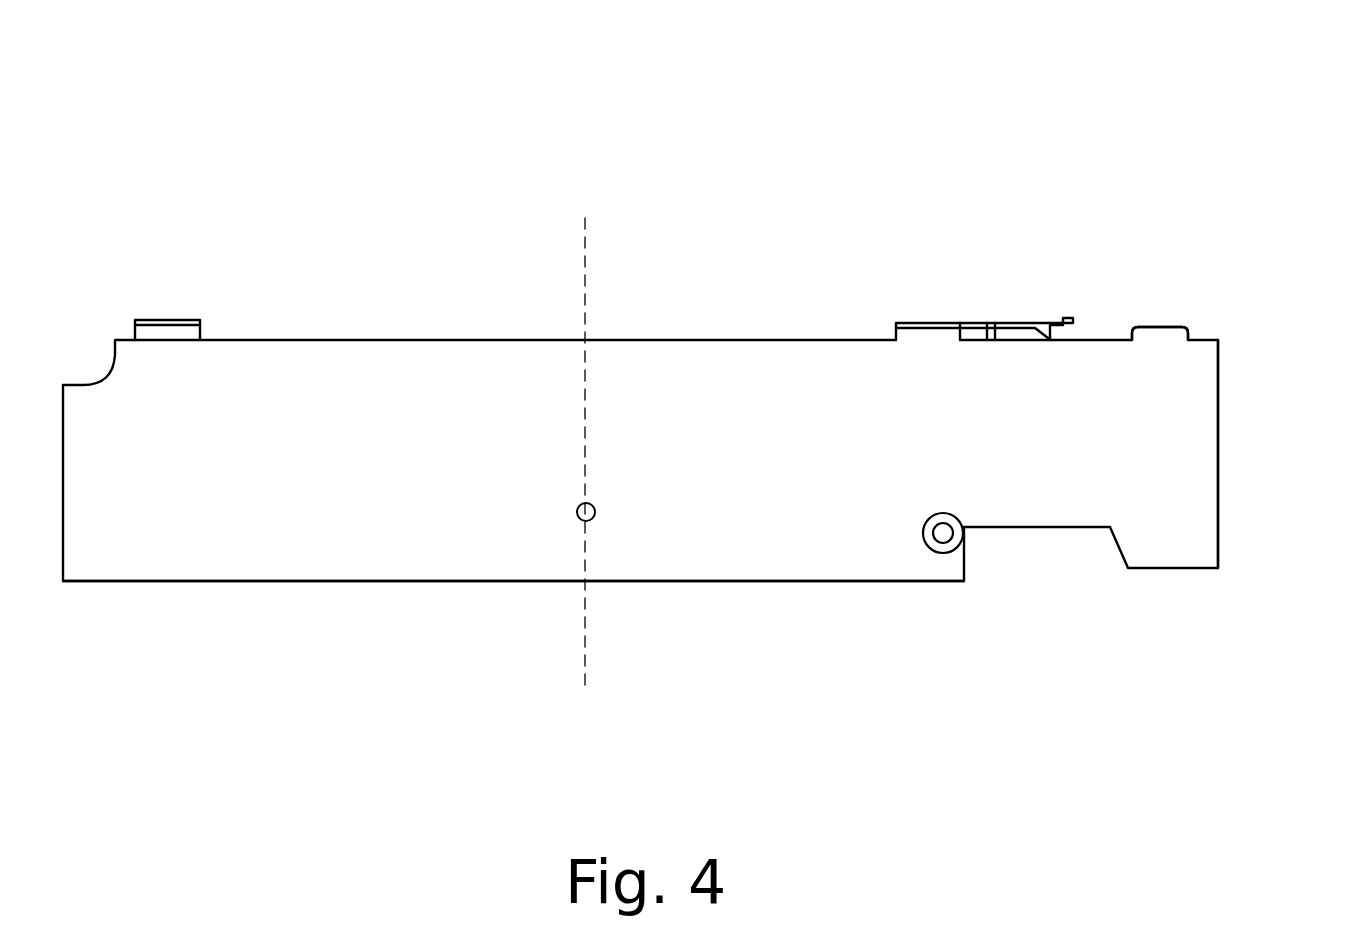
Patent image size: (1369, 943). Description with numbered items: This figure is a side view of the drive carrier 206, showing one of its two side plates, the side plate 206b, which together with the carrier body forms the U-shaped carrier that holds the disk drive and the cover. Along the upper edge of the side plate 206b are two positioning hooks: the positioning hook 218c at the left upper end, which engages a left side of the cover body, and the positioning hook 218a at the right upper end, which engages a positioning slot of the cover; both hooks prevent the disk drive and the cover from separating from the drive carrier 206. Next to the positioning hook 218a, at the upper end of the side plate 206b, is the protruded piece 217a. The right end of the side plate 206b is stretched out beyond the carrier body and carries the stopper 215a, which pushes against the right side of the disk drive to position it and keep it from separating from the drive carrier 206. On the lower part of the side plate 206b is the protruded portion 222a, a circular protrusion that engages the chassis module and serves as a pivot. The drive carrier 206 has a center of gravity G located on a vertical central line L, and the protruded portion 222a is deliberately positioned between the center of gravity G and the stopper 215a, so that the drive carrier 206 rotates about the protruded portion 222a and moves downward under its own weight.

The drive carrier 206 is at (1005, 118).
The positioning hook 218c is at (162, 338).
The positioning hook 218a is at (1043, 335).
The protruded piece 217a is at (1165, 337).
The stopper 215a is at (1220, 425).
The side plate 206b is at (230, 535).
The protruded portion 222a is at (941, 537).
The central line L is at (578, 428).
The center of gravity G is at (608, 514).